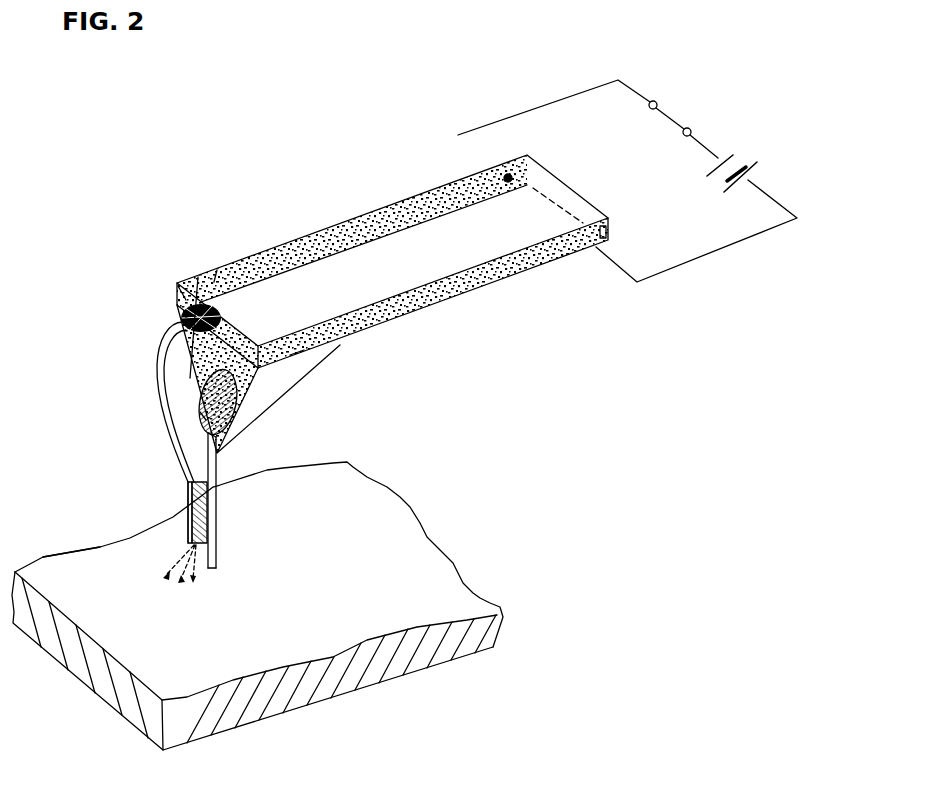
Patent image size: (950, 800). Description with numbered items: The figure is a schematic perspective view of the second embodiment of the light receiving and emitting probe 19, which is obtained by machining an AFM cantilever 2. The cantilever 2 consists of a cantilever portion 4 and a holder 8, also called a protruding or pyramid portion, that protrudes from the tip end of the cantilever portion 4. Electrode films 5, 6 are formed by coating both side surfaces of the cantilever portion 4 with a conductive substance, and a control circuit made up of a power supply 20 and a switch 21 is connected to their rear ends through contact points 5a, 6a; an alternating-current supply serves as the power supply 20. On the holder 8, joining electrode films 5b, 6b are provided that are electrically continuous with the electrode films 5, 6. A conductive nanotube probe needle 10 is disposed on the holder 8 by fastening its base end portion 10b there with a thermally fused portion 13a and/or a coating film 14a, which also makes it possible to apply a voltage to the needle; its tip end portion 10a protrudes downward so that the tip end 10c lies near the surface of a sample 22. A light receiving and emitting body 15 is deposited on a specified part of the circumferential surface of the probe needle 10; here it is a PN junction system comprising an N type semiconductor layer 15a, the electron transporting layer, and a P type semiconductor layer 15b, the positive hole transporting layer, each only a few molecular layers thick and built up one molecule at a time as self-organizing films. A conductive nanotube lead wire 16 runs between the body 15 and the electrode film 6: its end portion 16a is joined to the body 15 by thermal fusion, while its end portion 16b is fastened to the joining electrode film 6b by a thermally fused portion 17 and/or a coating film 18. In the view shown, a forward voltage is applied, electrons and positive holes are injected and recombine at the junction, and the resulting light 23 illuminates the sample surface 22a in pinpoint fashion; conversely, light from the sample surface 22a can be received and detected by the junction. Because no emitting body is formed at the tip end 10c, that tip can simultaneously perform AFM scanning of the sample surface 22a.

The AFM cantilever 2 is at (331, 222).
The cantilever portion 4 is at (445, 262).
The electrode film 5 is at (525, 267).
The contact point 5a is at (596, 245).
The joining electrode film 5b is at (305, 368).
The electrode film 6 is at (442, 207).
The contact point 6a is at (505, 178).
The joining electrode film 6b is at (183, 322).
The holder 8 is at (277, 382).
The conductive nanotube probe needle 10 is at (224, 484).
The tip end portion 10a is at (217, 540).
The base end portion 10b is at (240, 428).
The tip end 10c is at (213, 568).
The thermally fused portion 13a is at (200, 412).
The coating film 14a is at (236, 388).
The light receiving and emitting body 15 is at (103, 463).
The N type semiconductor layer 15a is at (192, 493).
The P type semiconductor layer 15b is at (192, 503).
The conductive nanotube lead wire 16 is at (157, 363).
The lead wire end portion 16a is at (188, 530).
The lead wire end portion 16b is at (178, 285).
The thermally fused portion 17 is at (198, 277).
The coating film 18 is at (217, 270).
The light receiving and emitting probe 19 is at (341, 170).
The power supply 20 is at (763, 165).
The switch 21 is at (672, 113).
The sample 22 is at (330, 680).
The sample surface 22a is at (157, 653).
The light 23 is at (173, 560).